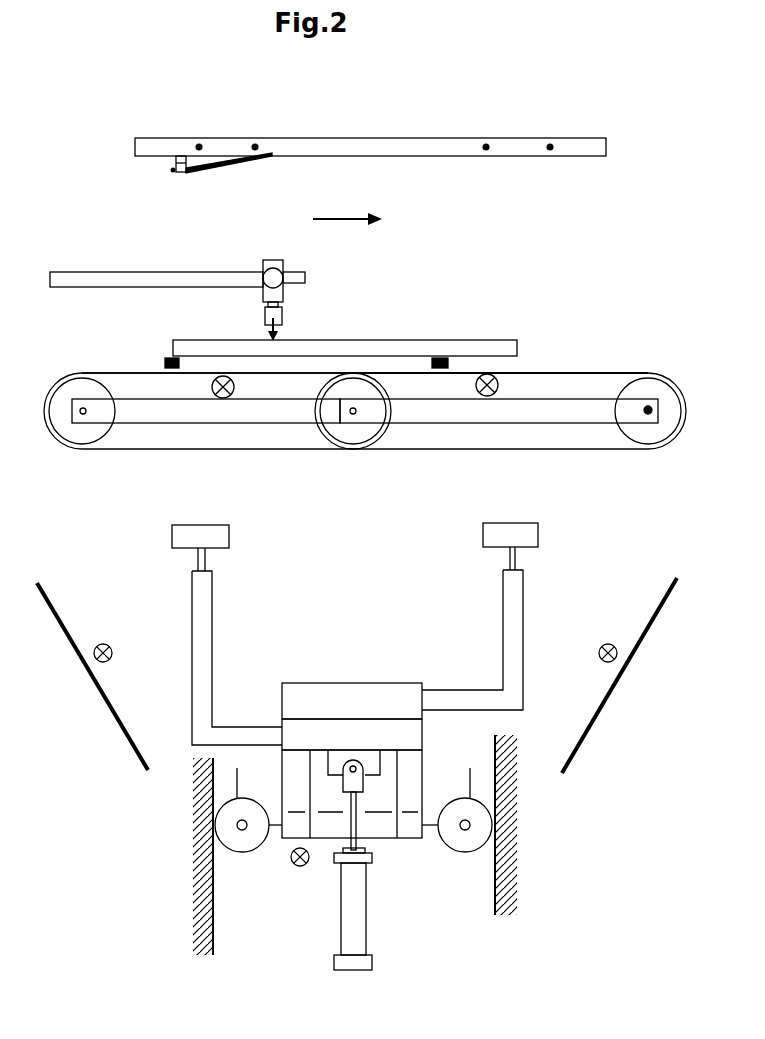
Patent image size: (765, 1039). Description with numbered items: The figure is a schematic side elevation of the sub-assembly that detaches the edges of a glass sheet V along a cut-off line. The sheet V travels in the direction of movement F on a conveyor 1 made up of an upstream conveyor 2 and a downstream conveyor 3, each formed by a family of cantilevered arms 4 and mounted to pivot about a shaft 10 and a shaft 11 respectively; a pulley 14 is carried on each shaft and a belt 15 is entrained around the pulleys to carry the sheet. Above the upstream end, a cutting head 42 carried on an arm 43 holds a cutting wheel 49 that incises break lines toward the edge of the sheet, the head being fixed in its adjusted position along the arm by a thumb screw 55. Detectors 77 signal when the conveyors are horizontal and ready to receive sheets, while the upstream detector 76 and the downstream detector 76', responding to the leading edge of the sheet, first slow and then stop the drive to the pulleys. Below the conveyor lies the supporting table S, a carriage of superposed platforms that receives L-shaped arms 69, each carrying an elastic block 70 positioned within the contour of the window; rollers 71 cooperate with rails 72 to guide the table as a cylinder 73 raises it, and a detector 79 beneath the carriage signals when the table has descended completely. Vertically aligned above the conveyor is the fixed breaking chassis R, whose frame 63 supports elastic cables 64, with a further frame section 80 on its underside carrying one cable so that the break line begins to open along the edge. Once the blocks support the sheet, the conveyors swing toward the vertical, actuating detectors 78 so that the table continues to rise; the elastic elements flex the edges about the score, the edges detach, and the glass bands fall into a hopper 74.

The conveyor 1 is at (545, 372).
The upstream conveyor 2 is at (137, 370).
The downstream conveyor 3 is at (518, 371).
The arms 4 is at (461, 415).
The shaft 10 is at (83, 425).
The shaft 11 is at (650, 418).
The pulley 14 is at (340, 430).
The belt 15 is at (284, 371).
The cutting head 42 is at (285, 266).
The arm 43 is at (158, 275).
The cutting wheel 49 is at (280, 316).
The thumb screw 55 is at (268, 268).
The frame 63 is at (142, 143).
The elastic cables 64 is at (218, 168).
The arms 69 is at (520, 603).
The elastic block 70 is at (527, 537).
The rollers 71 is at (232, 843).
The rails 72 is at (508, 858).
The cylinder 73 is at (362, 903).
The hopper 74 is at (603, 713).
The upstream detector 76 is at (187, 441).
The downstream detector 76' is at (527, 437).
The detector 77 is at (166, 359).
The detectors 78 is at (96, 657).
The detector 79 is at (299, 867).
The frame section 80 is at (172, 170).
The breaking chassis R is at (456, 143).
The direction of movement F is at (347, 211).
The sheet V is at (400, 345).
The supporting table S is at (380, 790).